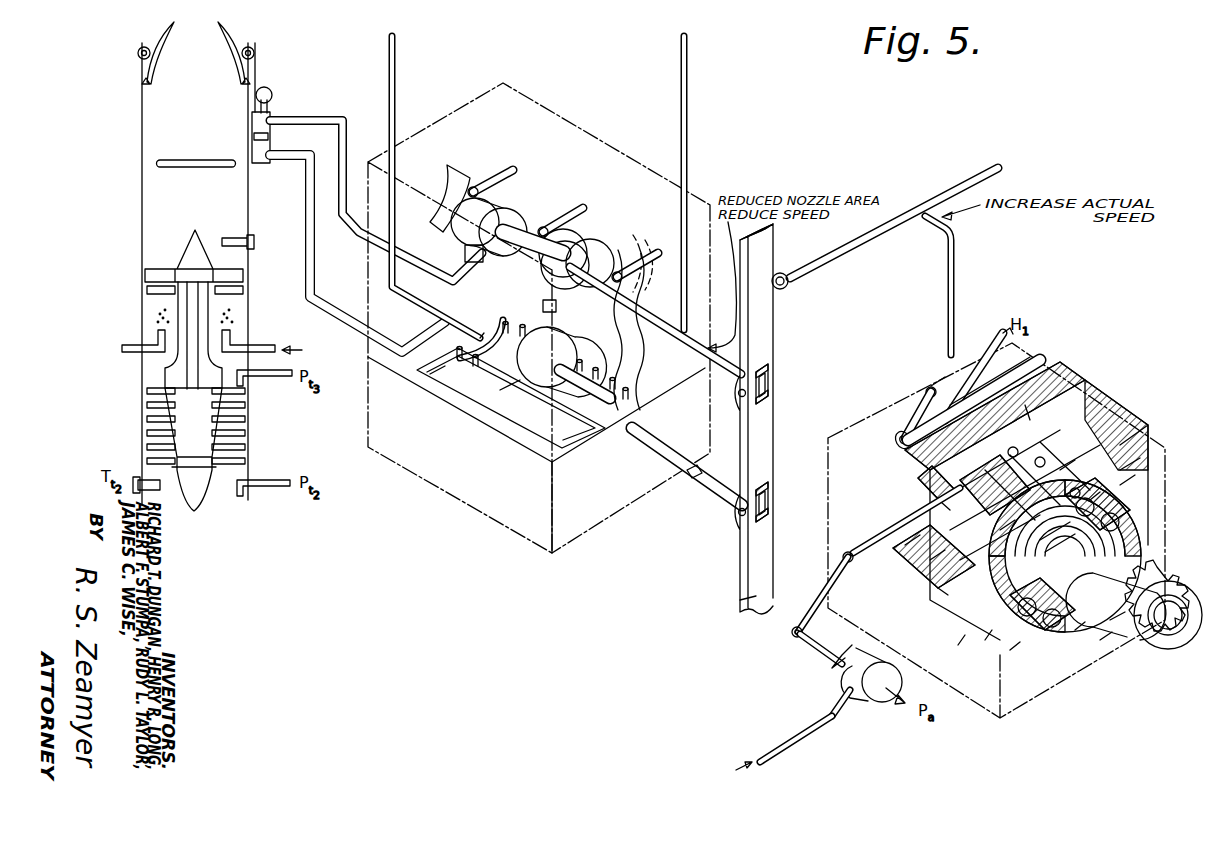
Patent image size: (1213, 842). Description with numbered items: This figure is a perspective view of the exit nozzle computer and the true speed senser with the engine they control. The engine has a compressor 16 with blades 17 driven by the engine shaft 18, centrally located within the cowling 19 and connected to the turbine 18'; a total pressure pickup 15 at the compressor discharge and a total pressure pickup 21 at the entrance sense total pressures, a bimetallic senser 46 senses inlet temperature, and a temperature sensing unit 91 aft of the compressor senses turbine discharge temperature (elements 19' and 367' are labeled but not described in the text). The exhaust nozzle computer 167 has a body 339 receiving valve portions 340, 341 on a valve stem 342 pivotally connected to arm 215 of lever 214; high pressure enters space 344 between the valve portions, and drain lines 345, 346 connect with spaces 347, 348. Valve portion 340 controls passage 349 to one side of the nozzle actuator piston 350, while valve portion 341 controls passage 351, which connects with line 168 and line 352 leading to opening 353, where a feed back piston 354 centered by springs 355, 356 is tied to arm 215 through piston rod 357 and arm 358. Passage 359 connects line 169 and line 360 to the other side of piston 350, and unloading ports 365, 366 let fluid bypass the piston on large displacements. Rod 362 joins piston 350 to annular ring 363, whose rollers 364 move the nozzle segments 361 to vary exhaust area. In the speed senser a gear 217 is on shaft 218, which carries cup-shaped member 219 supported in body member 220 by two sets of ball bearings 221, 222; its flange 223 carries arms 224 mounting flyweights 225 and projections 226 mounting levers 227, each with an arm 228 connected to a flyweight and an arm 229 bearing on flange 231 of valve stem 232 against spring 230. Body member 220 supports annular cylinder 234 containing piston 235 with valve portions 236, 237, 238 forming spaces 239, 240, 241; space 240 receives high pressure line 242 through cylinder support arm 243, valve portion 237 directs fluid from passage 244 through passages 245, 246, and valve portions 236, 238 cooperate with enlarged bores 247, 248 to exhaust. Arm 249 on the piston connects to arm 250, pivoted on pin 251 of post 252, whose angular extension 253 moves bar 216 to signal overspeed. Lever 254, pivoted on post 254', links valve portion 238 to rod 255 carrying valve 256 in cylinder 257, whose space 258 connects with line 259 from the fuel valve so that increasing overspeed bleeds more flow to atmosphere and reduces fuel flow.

The rollers 364 is at (252, 46).
The segments 361 is at (219, 37).
The annular ring 363 is at (258, 46).
The rod 362 is at (270, 105).
The nozzle actuator piston 350 is at (254, 141).
The passage 349 is at (348, 227).
The line 360 is at (350, 323).
The flame holder 367' is at (155, 179).
The temperature sensing unit 91 is at (226, 237).
The turbine 18' is at (168, 256).
The turbine stator 19' is at (216, 290).
The engine shaft 18 is at (160, 335).
The cowling 19 is at (170, 274).
The compressor 16 is at (193, 449).
The blades 17 is at (238, 453).
The total pressure pickup 15 is at (246, 378).
The total pressure pickup 21 is at (241, 494).
The bimetallic senser 46 is at (150, 481).
The exhaust nozzle computer 167 is at (470, 506).
The computer body 339 is at (513, 522).
The line 169 is at (397, 51).
The passage 359 is at (447, 312).
The line 168 is at (689, 65).
The space 347 is at (470, 180).
The valve portion 340 is at (636, 240).
The space 344 is at (531, 218).
The drain line 345 is at (569, 178).
The valve portion 341 is at (592, 226).
The space 348 is at (623, 240).
The drain line 346 is at (636, 250).
The valve stem 342 is at (733, 357).
The passage 351 is at (544, 304).
The spring 355 is at (527, 322).
The spring 356 is at (560, 415).
The line 352 is at (642, 386).
The opening 353 is at (616, 420).
The unloading port 365 is at (452, 386).
The feed back piston 354 is at (494, 396).
The unloading port 366 is at (512, 410).
The piston rod 357 is at (658, 444).
The arm 358 is at (699, 487).
The arm 215 is at (740, 571).
The lever 214 is at (737, 602).
The bar 216 is at (952, 190).
The angular extension 253 is at (956, 259).
The gear 217 is at (1172, 650).
The shaft 218 is at (1140, 578).
The body member 220 is at (1130, 465).
The flange 231 is at (1100, 561).
The arm 229 is at (1058, 640).
The piston 235 is at (918, 489).
The ball bearings 221 is at (1115, 531).
The ball bearings 222 is at (1120, 546).
The flange 223 is at (1140, 480).
The valve portion 236 is at (1007, 527).
The flyweight 225 is at (882, 578).
The space 240 is at (902, 597).
The valve portion 237 is at (900, 540).
The passage 244 is at (919, 566).
The valve portion 238 is at (920, 472).
The annular cylinder 234 is at (916, 501).
The space 241 is at (892, 521).
The post 254' is at (816, 538).
The lever 254 is at (813, 594).
The rod 255 is at (810, 642).
The cylinder 257 is at (836, 674).
The valve 256 is at (872, 688).
The space 258 is at (857, 700).
The line 259 is at (792, 748).
The high pressure fluid line 242 is at (991, 333).
The post 252 is at (934, 388).
The support pin 251 is at (927, 388).
The arm 250 is at (905, 412).
The arm 249 is at (897, 448).
The cylinder support arm 243 is at (920, 398).
The passage 245 is at (905, 400).
The enlarged bore 248 is at (1030, 420).
The passage 246 is at (1046, 455).
The enlarged bore 247 is at (1062, 468).
The arms 224 is at (1076, 486).
The arm 228 is at (1093, 496).
The lever 227 is at (960, 648).
The projections 226 is at (985, 641).
The space 239 is at (1012, 651).
The cup-shaped member 219 is at (1080, 630).
The spring 230 is at (1105, 642).
The valve stem 232 is at (1115, 622).